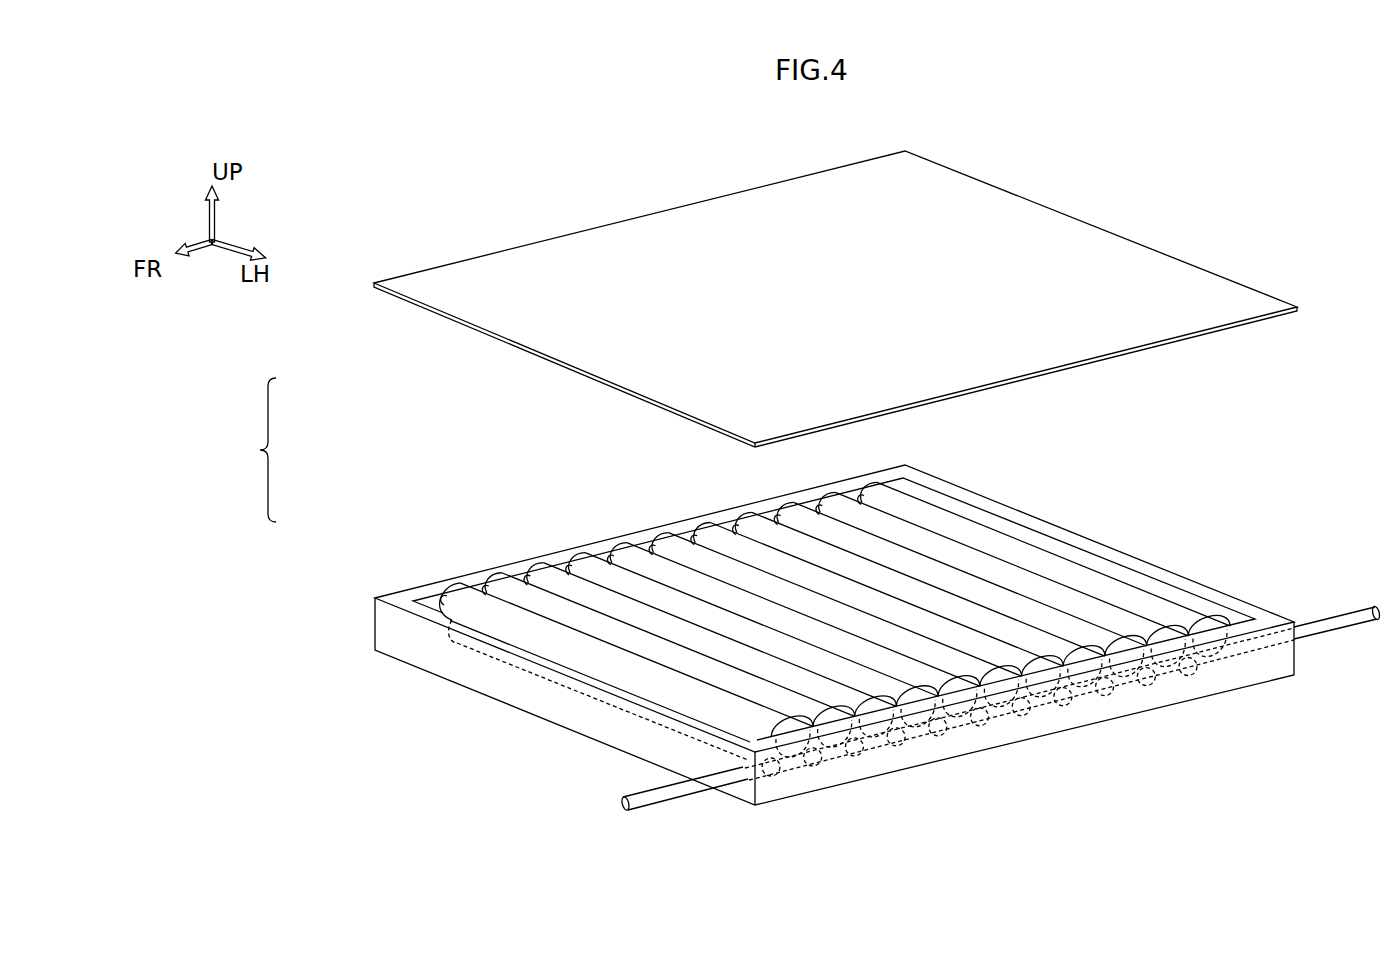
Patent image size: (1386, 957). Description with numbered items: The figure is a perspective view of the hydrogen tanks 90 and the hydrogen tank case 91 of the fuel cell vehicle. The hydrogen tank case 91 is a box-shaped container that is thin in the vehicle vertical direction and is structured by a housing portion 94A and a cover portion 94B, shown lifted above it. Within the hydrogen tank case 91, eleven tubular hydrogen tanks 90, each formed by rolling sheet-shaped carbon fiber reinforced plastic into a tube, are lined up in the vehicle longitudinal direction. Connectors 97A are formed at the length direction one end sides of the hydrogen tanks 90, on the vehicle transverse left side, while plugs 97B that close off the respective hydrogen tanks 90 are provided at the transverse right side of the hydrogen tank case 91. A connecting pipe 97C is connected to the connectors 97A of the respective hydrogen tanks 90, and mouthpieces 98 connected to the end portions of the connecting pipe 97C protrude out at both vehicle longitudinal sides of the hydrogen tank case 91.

The hydrogen tank 90 is at (655, 568).
The hydrogen tank case 91 is at (250, 450).
The housing portion 94A is at (422, 590).
The cover portion 94B is at (482, 300).
The connector 97A is at (812, 762).
The plug 97B is at (444, 604).
The connecting pipe 97C is at (765, 768).
The mouthpiece 98 is at (1317, 619).